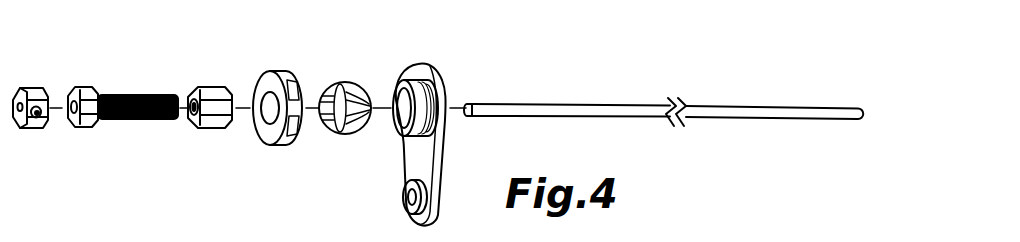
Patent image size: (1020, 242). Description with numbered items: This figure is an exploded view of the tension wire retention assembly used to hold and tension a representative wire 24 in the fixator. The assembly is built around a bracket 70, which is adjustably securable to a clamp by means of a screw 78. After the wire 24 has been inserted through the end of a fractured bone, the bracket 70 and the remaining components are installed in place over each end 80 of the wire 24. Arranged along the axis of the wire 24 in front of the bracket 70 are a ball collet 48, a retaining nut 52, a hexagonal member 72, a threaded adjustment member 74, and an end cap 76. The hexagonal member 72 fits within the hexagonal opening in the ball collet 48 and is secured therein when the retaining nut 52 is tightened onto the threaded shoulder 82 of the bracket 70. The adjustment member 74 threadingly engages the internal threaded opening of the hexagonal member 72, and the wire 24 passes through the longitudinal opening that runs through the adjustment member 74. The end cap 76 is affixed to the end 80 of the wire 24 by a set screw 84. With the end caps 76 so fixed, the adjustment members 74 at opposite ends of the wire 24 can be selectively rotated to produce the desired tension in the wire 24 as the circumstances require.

The wire 24 is at (640, 106).
The ball collet 48 is at (352, 82).
The retaining nut 52 is at (278, 70).
The bracket 70 is at (416, 163).
The hexagonal member 72 is at (213, 87).
The threaded adjustment member 74 is at (130, 92).
The end cap 76 is at (38, 88).
The screw 78 is at (408, 200).
The end 80 is at (481, 104).
The threaded shoulder 82 is at (410, 74).
The set screw 84 is at (44, 126).